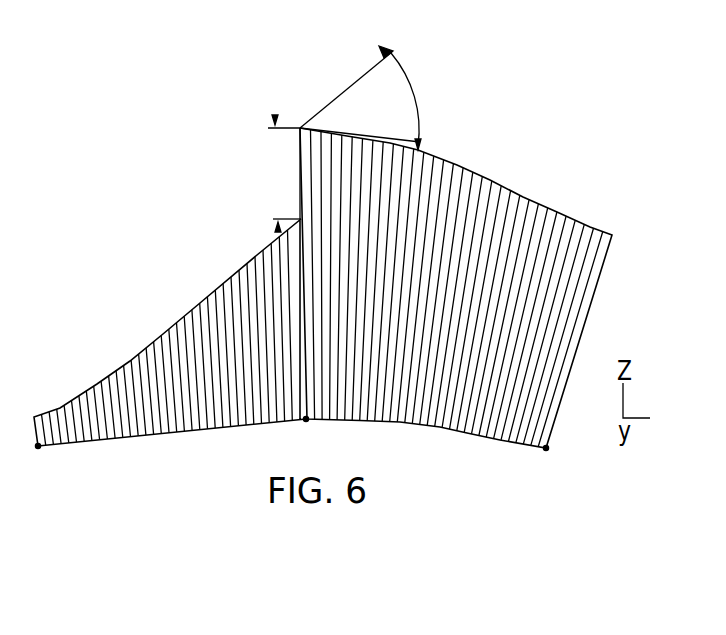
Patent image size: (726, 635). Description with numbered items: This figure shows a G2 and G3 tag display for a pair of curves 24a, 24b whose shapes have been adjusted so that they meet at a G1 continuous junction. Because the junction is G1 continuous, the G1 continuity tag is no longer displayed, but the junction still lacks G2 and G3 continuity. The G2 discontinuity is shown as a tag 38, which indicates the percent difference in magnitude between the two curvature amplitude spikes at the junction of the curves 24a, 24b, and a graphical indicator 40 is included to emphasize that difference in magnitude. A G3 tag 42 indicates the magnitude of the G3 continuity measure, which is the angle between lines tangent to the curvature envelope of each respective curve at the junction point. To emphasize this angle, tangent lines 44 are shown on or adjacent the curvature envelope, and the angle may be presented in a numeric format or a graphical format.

The curve 24a is at (171, 339).
The curve 24b is at (456, 293).
The G2 tag 38 is at (230, 158).
The graphical indicator 40 is at (275, 216).
The G3 tag 42 is at (475, 84).
The tangent lines 44 is at (352, 100).